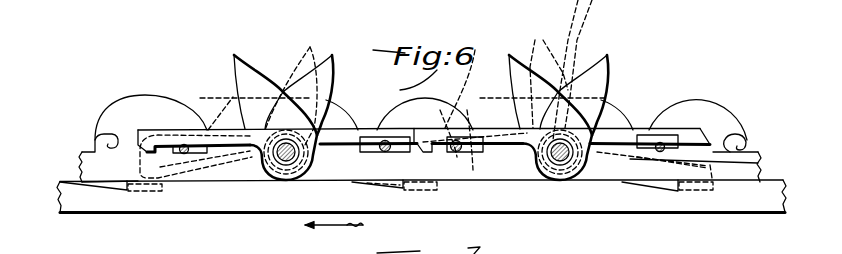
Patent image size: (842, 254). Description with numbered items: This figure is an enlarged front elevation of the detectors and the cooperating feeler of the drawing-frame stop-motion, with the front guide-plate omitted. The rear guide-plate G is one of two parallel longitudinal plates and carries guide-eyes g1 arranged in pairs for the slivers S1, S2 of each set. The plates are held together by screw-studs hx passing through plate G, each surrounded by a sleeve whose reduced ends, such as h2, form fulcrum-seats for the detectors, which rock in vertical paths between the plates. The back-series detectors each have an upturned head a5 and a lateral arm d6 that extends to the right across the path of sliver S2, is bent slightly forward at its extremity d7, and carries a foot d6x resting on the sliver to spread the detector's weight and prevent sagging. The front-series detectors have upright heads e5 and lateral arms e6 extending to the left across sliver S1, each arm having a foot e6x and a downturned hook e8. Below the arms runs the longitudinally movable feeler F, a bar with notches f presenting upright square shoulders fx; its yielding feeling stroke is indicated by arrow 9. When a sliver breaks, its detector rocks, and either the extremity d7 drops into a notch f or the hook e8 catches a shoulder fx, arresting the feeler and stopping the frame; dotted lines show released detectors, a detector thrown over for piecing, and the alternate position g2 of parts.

The feeler F is at (220, 200).
The notch f is at (100, 188).
The shoulder fx is at (767, 231).
The guide-plate G is at (82, 152).
The lateral arm d6 is at (640, 133).
The bent extremity d7 is at (707, 133).
The guide-eye g1 is at (746, 143).
The slide bar alternate position g2 is at (393, 133).
The sliver S1 is at (183, 147).
The sliver S2 is at (787, 163).
The foot d6x is at (673, 137).
The downturned hook e8 is at (420, 150).
The lateral arm e6 is at (478, 129).
The foot e6x is at (403, 85).
The blade arm a5 is at (521, 58).
The upright head e5 is at (611, 60).
The reduced end of sleeve h2 is at (553, 163).
The screw-stud hx is at (562, 160).
The arrow 9 is at (334, 226).